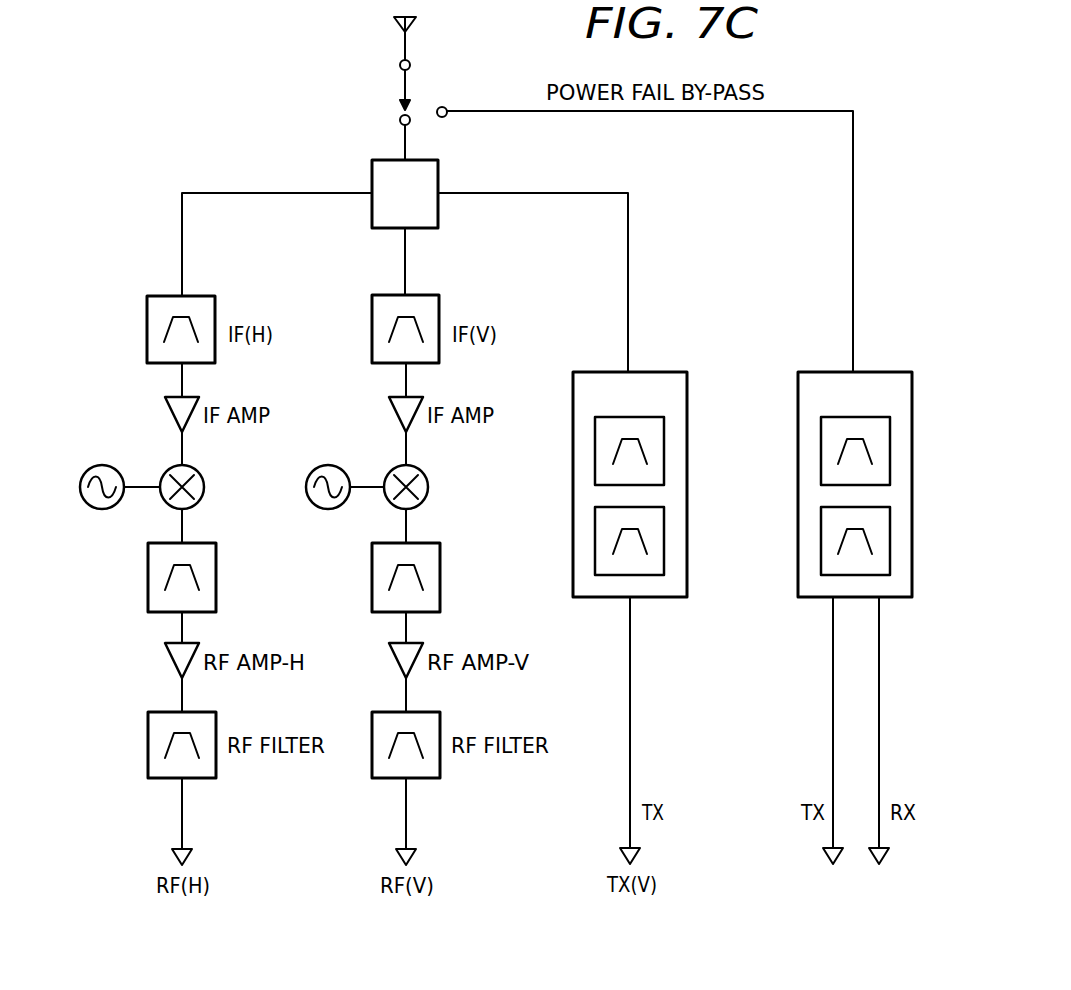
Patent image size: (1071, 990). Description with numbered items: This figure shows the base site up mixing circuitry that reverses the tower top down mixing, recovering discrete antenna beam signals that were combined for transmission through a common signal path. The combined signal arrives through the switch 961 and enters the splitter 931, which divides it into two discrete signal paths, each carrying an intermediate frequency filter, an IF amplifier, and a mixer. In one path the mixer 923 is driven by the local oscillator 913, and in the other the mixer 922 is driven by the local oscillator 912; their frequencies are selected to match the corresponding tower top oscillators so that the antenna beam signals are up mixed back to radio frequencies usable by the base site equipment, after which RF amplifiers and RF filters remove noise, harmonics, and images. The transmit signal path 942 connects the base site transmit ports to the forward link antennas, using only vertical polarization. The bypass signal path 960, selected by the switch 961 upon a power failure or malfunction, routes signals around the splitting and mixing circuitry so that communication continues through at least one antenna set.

The switch 961 is at (403, 90).
The splitter 931 is at (372, 182).
The transmit signal path 942 is at (630, 277).
The bypass signal path 960 is at (855, 277).
The mixer 923 is at (204, 487).
The mixer 922 is at (428, 487).
The local oscillator 913 is at (104, 510).
The local oscillator 912 is at (330, 510).